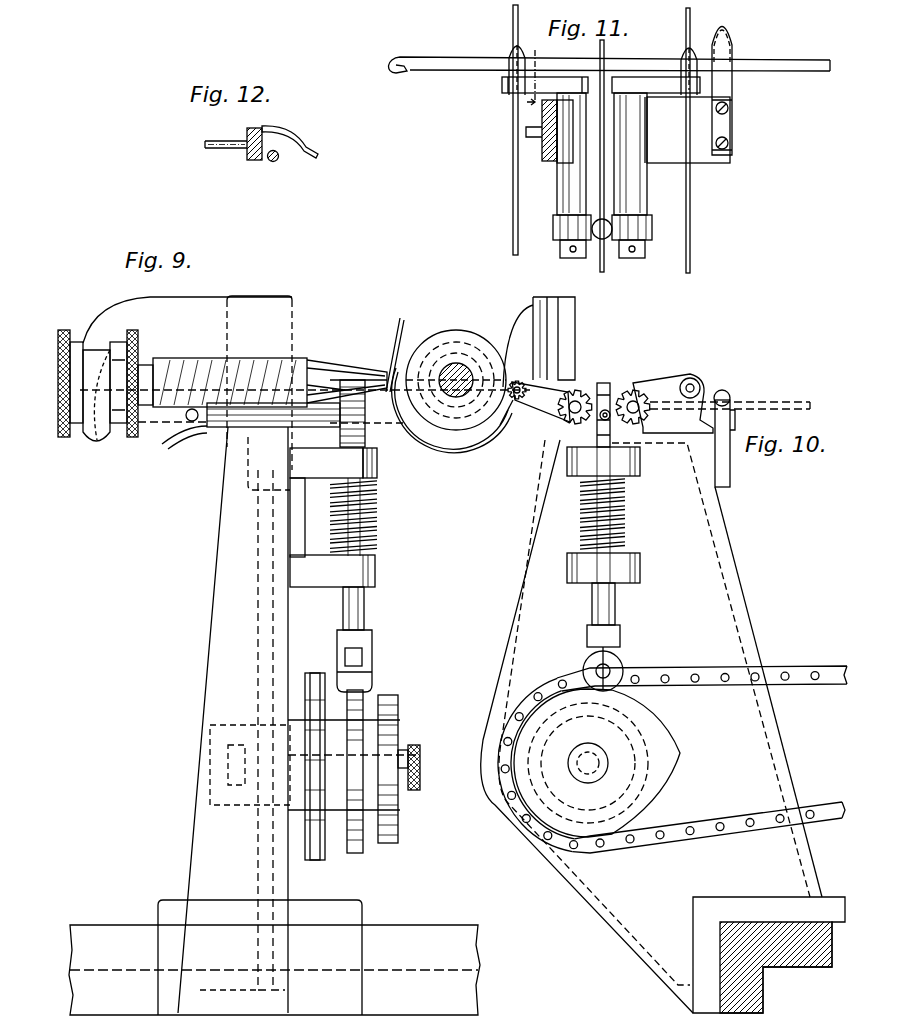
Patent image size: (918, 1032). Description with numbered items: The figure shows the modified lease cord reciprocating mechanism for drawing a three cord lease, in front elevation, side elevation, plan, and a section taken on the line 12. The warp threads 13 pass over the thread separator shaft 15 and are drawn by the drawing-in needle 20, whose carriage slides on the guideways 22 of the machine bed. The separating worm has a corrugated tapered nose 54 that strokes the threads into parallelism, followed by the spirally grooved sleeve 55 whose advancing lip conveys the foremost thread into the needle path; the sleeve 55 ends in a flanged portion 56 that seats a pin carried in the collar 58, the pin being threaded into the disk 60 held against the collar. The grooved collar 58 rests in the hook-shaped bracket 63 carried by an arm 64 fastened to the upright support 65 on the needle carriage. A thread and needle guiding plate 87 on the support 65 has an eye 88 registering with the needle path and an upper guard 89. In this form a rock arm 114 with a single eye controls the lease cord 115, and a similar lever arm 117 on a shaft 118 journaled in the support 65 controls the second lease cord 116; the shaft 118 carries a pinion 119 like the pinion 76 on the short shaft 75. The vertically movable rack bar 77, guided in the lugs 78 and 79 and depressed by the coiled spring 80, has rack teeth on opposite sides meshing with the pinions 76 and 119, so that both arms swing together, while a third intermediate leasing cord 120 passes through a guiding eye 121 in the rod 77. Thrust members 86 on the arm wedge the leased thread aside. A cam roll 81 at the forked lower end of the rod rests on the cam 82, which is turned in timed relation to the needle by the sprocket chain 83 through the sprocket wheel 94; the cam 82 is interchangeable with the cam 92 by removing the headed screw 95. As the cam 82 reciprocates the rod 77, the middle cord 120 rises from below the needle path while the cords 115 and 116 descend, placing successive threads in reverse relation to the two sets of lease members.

In FIG. 11, the section line 12 is at (531, 76).
In FIG. 9, the warp threads 13 is at (365, 456).
In FIG. 9, the thread separator shaft 15 is at (468, 362).
In FIG. 12, the drawing-in needle 20 is at (278, 160).
In FIG. 11, the drawing-in needle 20 is at (790, 64).
In FIG. 9, the drawing-in needle 20 is at (190, 372).
In FIG. 10, the drawing-in needle 20 is at (793, 402).
In FIG. 9, the guideways 22 is at (455, 968).
In FIG. 10, the guideways 22 is at (815, 970).
In FIG. 9, the corrugated tapered nose 54 is at (330, 360).
In FIG. 9, the spirally grooved sleeve 55 is at (294, 322).
In FIG. 9, the flanged portion 56 is at (140, 341).
In FIG. 9, the collar 58 is at (90, 437).
In FIG. 9, the disk 60 is at (68, 332).
In FIG. 9, the hook-shaped bracket 63 is at (100, 445).
In FIG. 11, the arm 64 is at (536, 134).
In FIG. 10, the arm 64 is at (525, 320).
In FIG. 11, the upright support 65 is at (662, 155).
In FIG. 9, the upright support 65 is at (212, 633).
In FIG. 10, the upright support 65 is at (525, 584).
In FIG. 11, the short shaft 75 is at (573, 258).
In FIG. 10, the short shaft 75 is at (570, 412).
In FIG. 11, the pinion 76 is at (553, 218).
In FIG. 9, the pinion 76 is at (366, 430).
In FIG. 10, the pinion 76 is at (560, 415).
In FIG. 9, the rack bar 77 is at (366, 609).
In FIG. 10, the rack bar 77 is at (617, 606).
In FIG. 9, the lug 78 is at (378, 470).
In FIG. 10, the lug 78 is at (642, 472).
In FIG. 9, the lug 79 is at (378, 570).
In FIG. 10, the lug 79 is at (642, 565).
In FIG. 9, the coiled spring 80 is at (380, 528).
In FIG. 10, the coiled spring 80 is at (628, 531).
In FIG. 9, the cam roll 81 is at (355, 666).
In FIG. 10, the cam roll 81 is at (625, 670).
In FIG. 9, the cam 82 is at (355, 850).
In FIG. 10, the cam 82 is at (675, 740).
In FIG. 9, the sprocket chain 83 is at (290, 808).
In FIG. 10, the sprocket chain 83 is at (800, 668).
In FIG. 12, the thrust members 86 is at (298, 139).
In FIG. 11, the thrust members 86 is at (511, 54).
In FIG. 11, the thread and needle guiding plate 87 is at (736, 135).
In FIG. 9, the thread and needle guiding plate 87 is at (184, 446).
In FIG. 10, the thread and needle guiding plate 87 is at (730, 400).
In FIG. 9, the eye 88 is at (215, 405).
In FIG. 11, the upper guard 89 is at (727, 44).
In FIG. 9, the cam 92 is at (400, 702).
In FIG. 9, the sprocket wheel 94 is at (315, 846).
In FIG. 9, the headed screw 95 is at (420, 752).
In FIG. 10, the headed screw 95 is at (608, 764).
In FIG. 12, the rock arm 114 is at (255, 162).
In FIG. 11, the rock arm 114 is at (546, 80).
In FIG. 10, the rock arm 114 is at (542, 405).
In FIG. 12, the lease cord 115 is at (214, 150).
In FIG. 11, the lease cord 115 is at (513, 200).
In FIG. 9, the lease cord 115 is at (401, 322).
In FIG. 10, the lease cord 115 is at (508, 425).
In FIG. 11, the second lease cord 116 is at (692, 260).
In FIG. 10, the second lease cord 116 is at (700, 380).
In FIG. 11, the lever arm 117 is at (643, 80).
In FIG. 10, the lever arm 117 is at (657, 383).
In FIG. 11, the shaft 118 is at (634, 258).
In FIG. 11, the pinion 119 is at (655, 228).
In FIG. 10, the pinion 119 is at (636, 392).
In FIG. 11, the intermediate leasing cord 120 is at (604, 262).
In FIG. 9, the intermediate leasing cord 120 is at (392, 424).
In FIG. 10, the intermediate leasing cord 120 is at (612, 430).
In FIG. 10, the guiding eye 121 is at (603, 382).